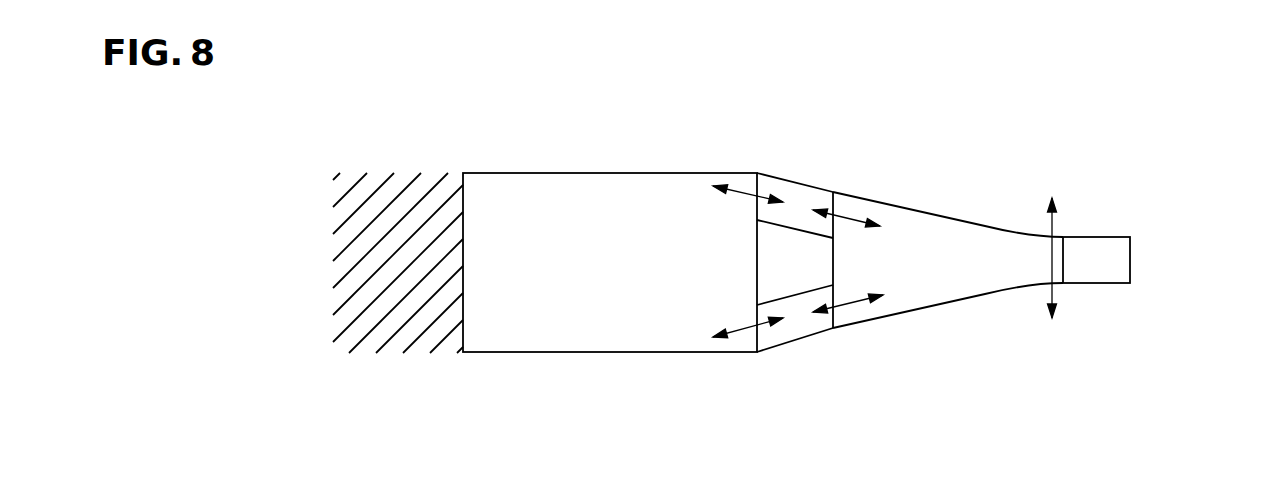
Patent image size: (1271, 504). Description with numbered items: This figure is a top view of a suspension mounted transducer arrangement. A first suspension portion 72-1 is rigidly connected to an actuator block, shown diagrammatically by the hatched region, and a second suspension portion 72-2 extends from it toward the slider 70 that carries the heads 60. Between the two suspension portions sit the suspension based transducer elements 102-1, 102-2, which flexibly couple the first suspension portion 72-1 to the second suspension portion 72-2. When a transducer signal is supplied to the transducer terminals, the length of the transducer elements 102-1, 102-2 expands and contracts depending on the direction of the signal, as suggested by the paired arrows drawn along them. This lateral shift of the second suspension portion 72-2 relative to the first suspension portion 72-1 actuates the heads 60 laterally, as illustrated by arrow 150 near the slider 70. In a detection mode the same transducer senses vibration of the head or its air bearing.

The first suspension portion 72-1 is at (652, 168).
The second suspension portion 72-2 is at (903, 217).
The suspension based transducer 102-1 is at (818, 184).
The suspension based transducer 102-2 is at (803, 323).
The arrow 150 is at (1053, 247).
The slider 70 is at (1103, 247).
The heads 60 is at (1146, 269).